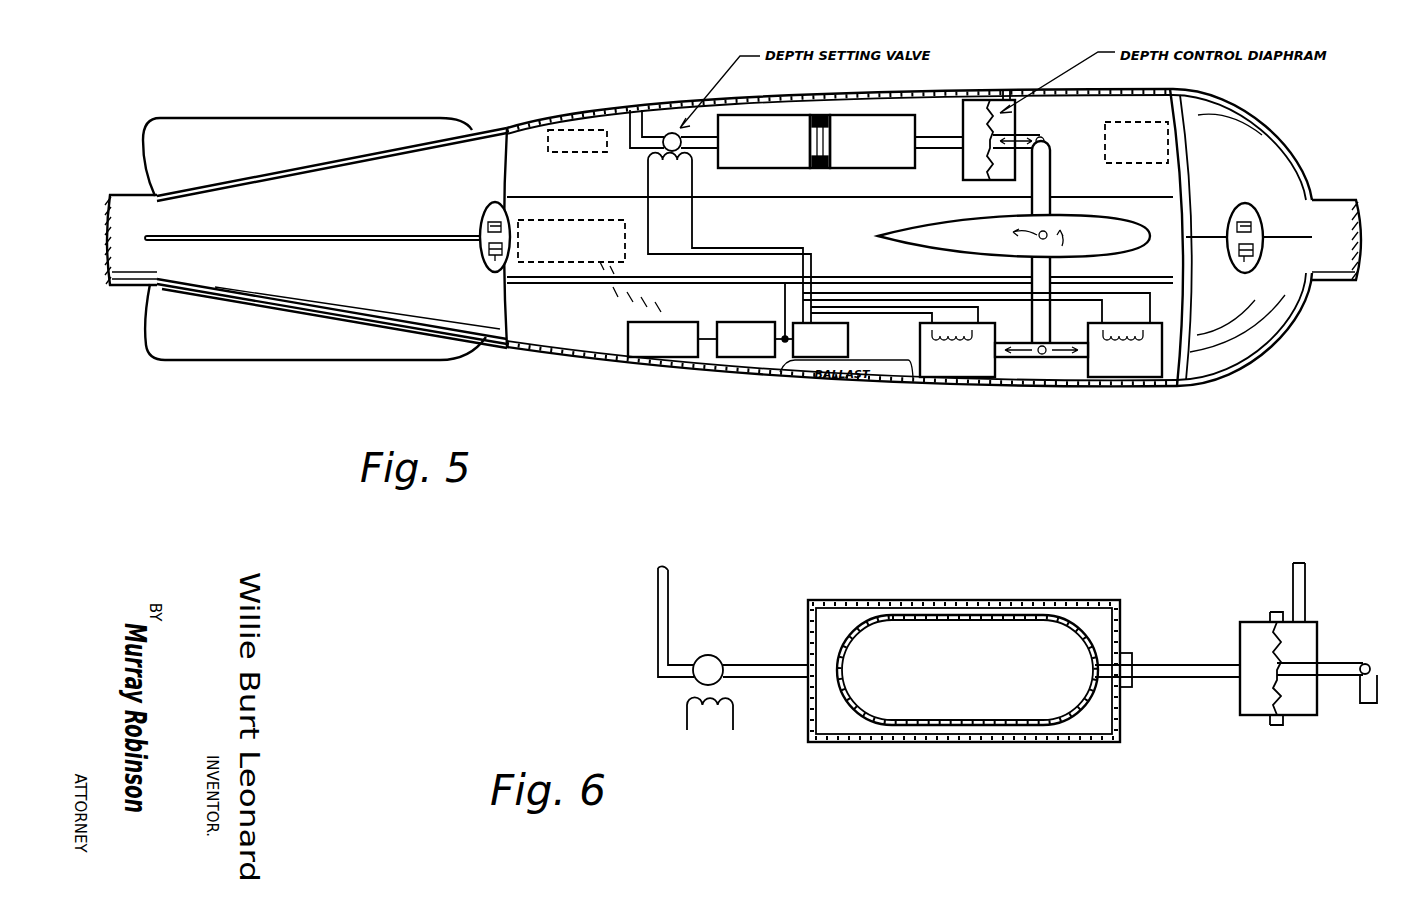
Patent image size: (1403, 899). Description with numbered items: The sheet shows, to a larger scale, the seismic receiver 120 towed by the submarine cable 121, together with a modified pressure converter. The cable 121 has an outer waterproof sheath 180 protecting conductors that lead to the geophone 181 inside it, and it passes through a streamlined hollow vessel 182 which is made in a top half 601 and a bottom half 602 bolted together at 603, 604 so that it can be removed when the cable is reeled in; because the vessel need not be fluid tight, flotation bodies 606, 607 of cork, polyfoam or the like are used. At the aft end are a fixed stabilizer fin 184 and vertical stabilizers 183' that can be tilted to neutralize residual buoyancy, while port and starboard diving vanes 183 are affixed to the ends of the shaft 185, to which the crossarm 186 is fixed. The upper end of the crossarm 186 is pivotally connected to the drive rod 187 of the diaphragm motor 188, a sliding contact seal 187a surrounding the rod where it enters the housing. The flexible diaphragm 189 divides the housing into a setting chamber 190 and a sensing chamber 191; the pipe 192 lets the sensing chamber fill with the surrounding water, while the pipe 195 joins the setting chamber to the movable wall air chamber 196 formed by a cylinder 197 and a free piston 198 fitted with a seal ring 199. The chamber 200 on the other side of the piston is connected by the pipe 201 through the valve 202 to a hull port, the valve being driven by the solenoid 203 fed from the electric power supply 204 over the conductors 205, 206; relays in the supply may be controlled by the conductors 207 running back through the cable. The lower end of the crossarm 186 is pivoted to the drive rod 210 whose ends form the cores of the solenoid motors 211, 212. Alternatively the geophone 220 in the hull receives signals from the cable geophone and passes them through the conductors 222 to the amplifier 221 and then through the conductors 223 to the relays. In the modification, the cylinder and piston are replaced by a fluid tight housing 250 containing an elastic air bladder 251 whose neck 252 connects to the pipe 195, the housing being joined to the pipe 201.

In FIG. 5, the seismic receiver 120 is at (498, 378).
In FIG. 5, the cable 121 is at (122, 195).
In FIG. 5, the outer waterproof sheath 180 is at (1360, 212).
In FIG. 5, the geophone 181 is at (563, 220).
In FIG. 5, the hollow vessel 182 is at (593, 368).
In FIG. 5, the diving vane 183 is at (1014, 236).
In FIG. 5, the vertical stabilizer 183' is at (312, 214).
In FIG. 5, the stabilizer fin 184 is at (240, 118).
In FIG. 5, the shaft 185 is at (1010, 236).
In FIG. 5, the crossarm 186 is at (1052, 188).
In FIG. 6, the crossarm 186 is at (1374, 712).
In FIG. 5, the drive rod 187 is at (1052, 160).
In FIG. 6, the drive rod 187 is at (1346, 660).
In FIG. 5, the sliding contact seal 187a is at (1047, 140).
In FIG. 5, the diaphragm motor 188 is at (1027, 116).
In FIG. 6, the diaphragm motor 188 is at (1245, 622).
In FIG. 5, the flexible diaphragm 189 is at (985, 112).
In FIG. 6, the flexible diaphragm 189 is at (1290, 638).
In FIG. 5, the setting chamber 190 is at (968, 168).
In FIG. 6, the setting chamber 190 is at (1250, 697).
In FIG. 5, the sensing chamber 191 is at (1003, 172).
In FIG. 6, the sensing chamber 191 is at (1303, 703).
In FIG. 5, the pipe 192 is at (1010, 94).
In FIG. 6, the pipe 192 is at (1305, 590).
In FIG. 5, the pipe 195 is at (945, 135).
In FIG. 6, the pipe 195 is at (1163, 662).
In FIG. 5, the movable wall air chamber 196 is at (852, 157).
In FIG. 5, the cylinder 197 is at (895, 170).
In FIG. 5, the free piston 198 is at (836, 115).
In FIG. 5, the seal ring 199 is at (820, 115).
In FIG. 5, the chamber 200 is at (757, 155).
In FIG. 5, the pipe 201 is at (703, 148).
In FIG. 6, the pipe 201 is at (765, 680).
In FIG. 5, the valve 202 is at (674, 132).
In FIG. 6, the valve 202 is at (710, 655).
In FIG. 5, the solenoid 203 is at (647, 170).
In FIG. 6, the solenoid 203 is at (708, 728).
In FIG. 5, the electric power supply 204 is at (852, 345).
In FIG. 5, the electric conductor 205 is at (700, 232).
In FIG. 5, the electric conductor 206 is at (650, 205).
In FIG. 5, the electric conductors 207 is at (783, 303).
In FIG. 5, the drive rod 210 is at (1068, 358).
In FIG. 5, the solenoid motor 211 is at (1158, 368).
In FIG. 5, the solenoid motor 212 is at (990, 370).
In FIG. 5, the geophone 220 is at (628, 340).
In FIG. 5, the amplifier 221 is at (738, 357).
In FIG. 5, the conductors 222 is at (708, 342).
In FIG. 5, the conductors 223 is at (788, 358).
In FIG. 6, the fluid tight housing 250 is at (843, 602).
In FIG. 6, the air bladder 251 is at (955, 617).
In FIG. 6, the neck 252 is at (1090, 670).
In FIG. 5, the top half 601 is at (1258, 171).
In FIG. 5, the bottom half 602 is at (1250, 301).
In FIG. 5, the bolt connection 603 is at (1255, 225).
In FIG. 5, the bolt connection 604 is at (483, 222).
In FIG. 5, the flotation body 606 is at (1136, 142).
In FIG. 5, the flotation body 607 is at (568, 130).